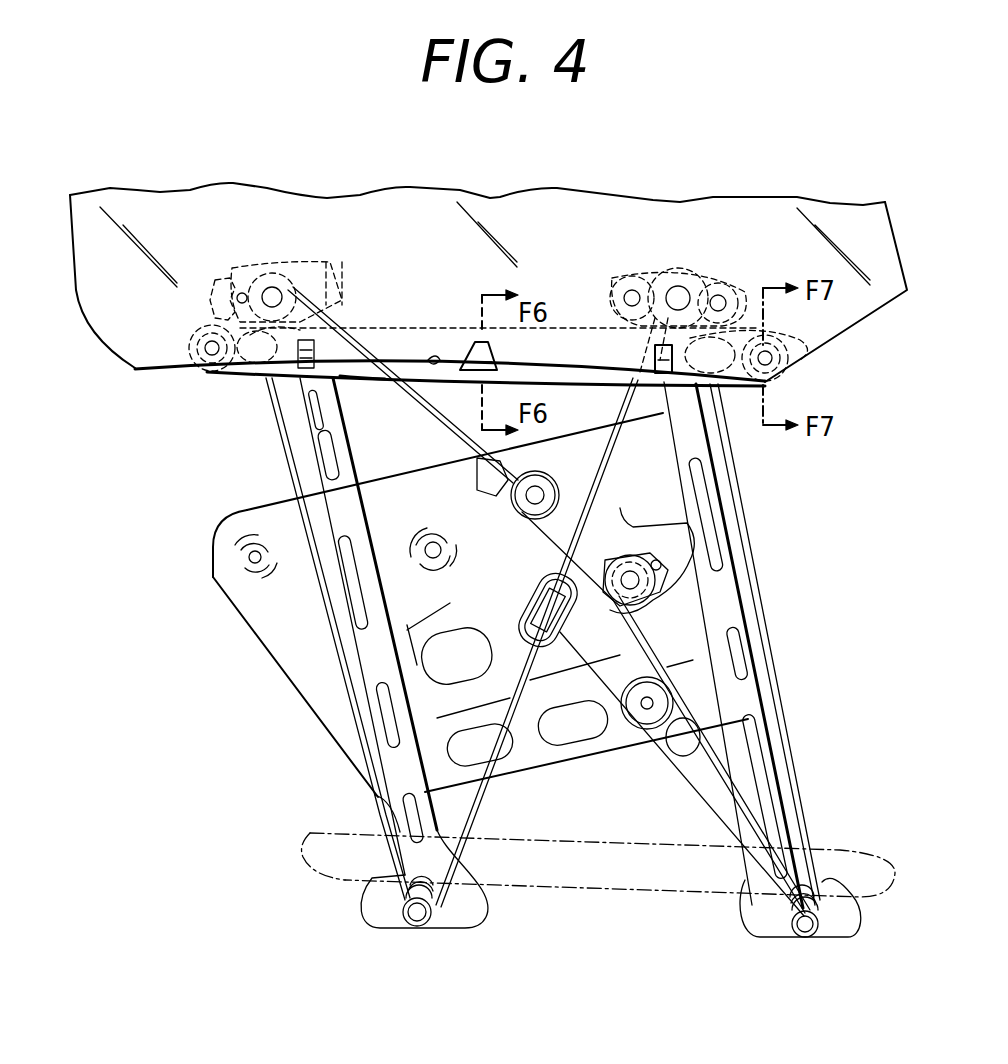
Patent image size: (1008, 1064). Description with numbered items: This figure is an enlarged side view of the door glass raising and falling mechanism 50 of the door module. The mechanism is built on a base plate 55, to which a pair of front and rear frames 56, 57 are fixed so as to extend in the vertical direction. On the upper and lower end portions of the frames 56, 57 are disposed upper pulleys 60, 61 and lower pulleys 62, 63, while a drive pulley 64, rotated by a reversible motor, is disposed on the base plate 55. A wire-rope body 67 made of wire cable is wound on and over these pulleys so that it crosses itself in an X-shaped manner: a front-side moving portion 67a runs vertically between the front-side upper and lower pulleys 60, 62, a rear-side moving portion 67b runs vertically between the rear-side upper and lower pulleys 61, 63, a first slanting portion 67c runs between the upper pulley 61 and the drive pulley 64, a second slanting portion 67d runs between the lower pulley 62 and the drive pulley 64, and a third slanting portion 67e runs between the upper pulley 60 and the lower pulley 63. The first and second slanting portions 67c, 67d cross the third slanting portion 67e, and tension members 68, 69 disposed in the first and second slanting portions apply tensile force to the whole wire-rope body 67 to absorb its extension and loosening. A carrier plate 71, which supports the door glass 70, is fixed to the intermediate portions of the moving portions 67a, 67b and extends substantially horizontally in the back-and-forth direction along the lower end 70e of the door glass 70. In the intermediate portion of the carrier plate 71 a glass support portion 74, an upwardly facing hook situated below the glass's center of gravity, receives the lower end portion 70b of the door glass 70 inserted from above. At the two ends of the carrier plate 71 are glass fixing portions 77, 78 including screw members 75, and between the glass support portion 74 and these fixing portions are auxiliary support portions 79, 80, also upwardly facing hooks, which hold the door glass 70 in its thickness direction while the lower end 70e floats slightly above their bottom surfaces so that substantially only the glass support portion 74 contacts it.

The door glass raising and falling mechanism 50 is at (195, 510).
The base plate 55 is at (334, 724).
The front frame 56 is at (740, 608).
The rear frame 57 is at (372, 660).
The upper pulley 60 is at (688, 285).
The upper pulley 61 is at (266, 283).
The lower pulley 62 is at (805, 938).
The lower pulley 63 is at (417, 928).
The drive pulley 64 is at (655, 585).
The wire-rope body 67 is at (365, 798).
The front-side moving portion 67a is at (778, 688).
The rear-side moving portion 67b is at (318, 608).
The first slanting portion 67c is at (470, 508).
The second slanting portion 67d is at (698, 807).
The third slanting portion 67e is at (485, 792).
The tension member 68 is at (510, 494).
The tension member 69 is at (668, 702).
The door glass 70 is at (651, 200).
The lower end portion 70b is at (600, 342).
The lower end 70e is at (437, 356).
The carrier plate 71 is at (368, 380).
The glass support portion 74 is at (478, 370).
The screw member 75 is at (775, 362).
The glass fixing portion 77 is at (790, 348).
The glass fixing portion 78 is at (205, 345).
The auxiliary support portion 79 is at (660, 380).
The auxiliary support portion 80 is at (303, 372).